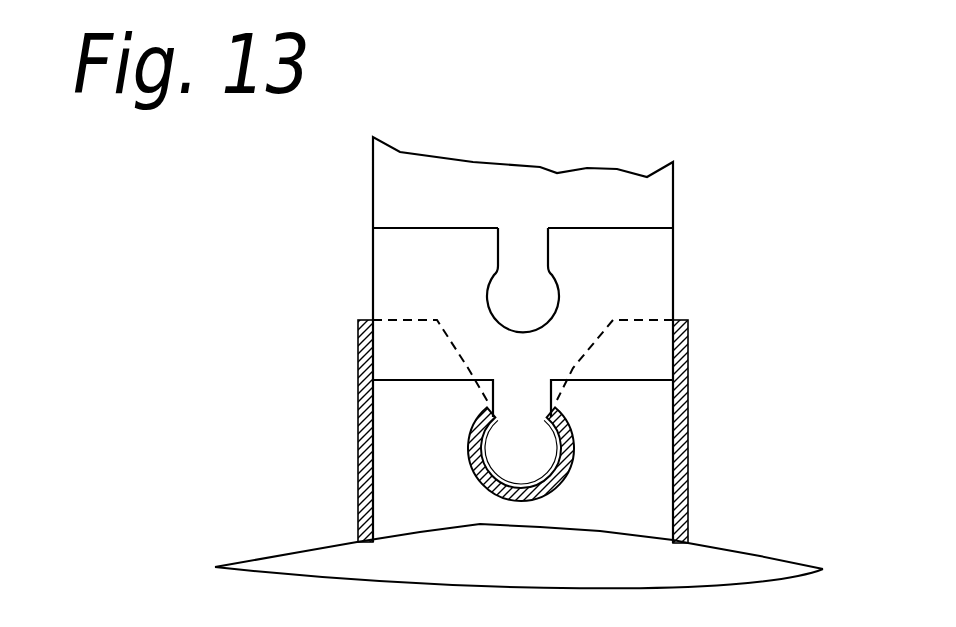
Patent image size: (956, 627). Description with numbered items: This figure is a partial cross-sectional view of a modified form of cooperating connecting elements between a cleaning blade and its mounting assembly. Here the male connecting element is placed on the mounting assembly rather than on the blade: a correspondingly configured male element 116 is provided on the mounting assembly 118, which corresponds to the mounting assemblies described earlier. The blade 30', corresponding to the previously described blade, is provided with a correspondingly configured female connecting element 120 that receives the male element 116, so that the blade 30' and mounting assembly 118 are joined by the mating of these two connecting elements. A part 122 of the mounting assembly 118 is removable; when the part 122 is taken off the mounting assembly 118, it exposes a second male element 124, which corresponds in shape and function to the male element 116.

The mounting assembly 118 is at (373, 228).
The part of the mounting assembly 122 is at (400, 283).
The second male element 124 is at (532, 298).
The female connecting element 120 is at (472, 367).
The blade 30' is at (519, 454).
The male element 116 is at (531, 455).